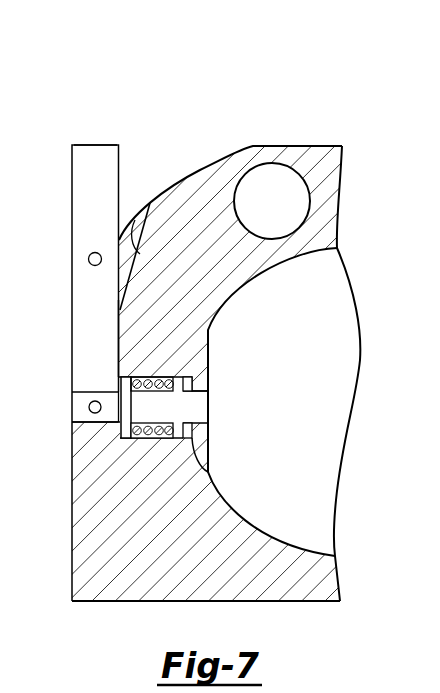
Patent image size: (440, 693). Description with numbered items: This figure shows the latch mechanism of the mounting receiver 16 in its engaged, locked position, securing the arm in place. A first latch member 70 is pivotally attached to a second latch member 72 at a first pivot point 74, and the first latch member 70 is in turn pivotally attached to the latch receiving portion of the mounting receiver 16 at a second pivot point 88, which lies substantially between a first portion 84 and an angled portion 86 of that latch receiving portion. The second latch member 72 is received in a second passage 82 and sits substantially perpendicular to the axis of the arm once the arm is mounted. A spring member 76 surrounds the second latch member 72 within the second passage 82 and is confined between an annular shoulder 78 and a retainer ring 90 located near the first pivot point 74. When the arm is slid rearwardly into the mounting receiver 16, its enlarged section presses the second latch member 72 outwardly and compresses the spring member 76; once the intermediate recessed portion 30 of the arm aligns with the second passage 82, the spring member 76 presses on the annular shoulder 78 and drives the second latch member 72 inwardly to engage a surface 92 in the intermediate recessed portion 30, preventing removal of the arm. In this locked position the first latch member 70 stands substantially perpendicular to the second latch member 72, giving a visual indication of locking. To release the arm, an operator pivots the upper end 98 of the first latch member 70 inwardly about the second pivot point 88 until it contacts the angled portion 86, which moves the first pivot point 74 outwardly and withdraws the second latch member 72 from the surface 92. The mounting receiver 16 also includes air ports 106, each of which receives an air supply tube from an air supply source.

The mounting receiver 16 is at (271, 72).
The intermediate recessed portion 30 is at (343, 405).
The first latch member 70 is at (82, 196).
The second latch member 72 is at (160, 419).
The first pivot point 74 is at (89, 407).
The spring member 76 is at (138, 433).
The annular shoulder 78 is at (180, 440).
The second passage 82 is at (192, 440).
The first portion 84 is at (118, 341).
The angled portion 86 is at (135, 220).
The second pivot point 88 is at (88, 259).
The retainer ring 90 is at (120, 427).
The surface 92 is at (285, 370).
The upper end 98 is at (88, 145).
The air ports 106 is at (275, 173).